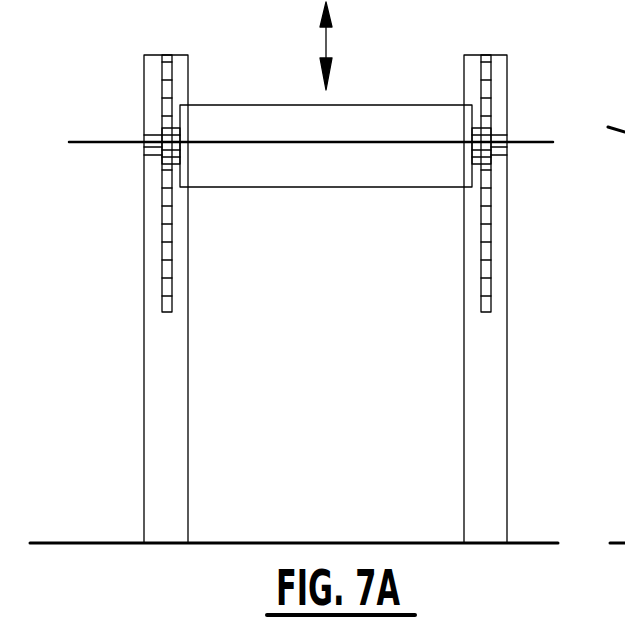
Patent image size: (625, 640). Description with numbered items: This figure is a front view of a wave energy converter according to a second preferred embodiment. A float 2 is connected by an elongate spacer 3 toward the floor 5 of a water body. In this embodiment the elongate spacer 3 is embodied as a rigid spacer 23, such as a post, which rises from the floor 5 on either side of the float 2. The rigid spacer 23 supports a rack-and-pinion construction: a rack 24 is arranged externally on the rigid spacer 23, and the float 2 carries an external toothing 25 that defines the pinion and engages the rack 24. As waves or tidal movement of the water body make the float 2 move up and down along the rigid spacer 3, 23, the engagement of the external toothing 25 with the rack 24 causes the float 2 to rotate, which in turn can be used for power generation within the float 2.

The float 2 is at (235, 118).
The elongate spacer 3 is at (363, 299).
The rigid spacer 23 is at (168, 402).
The rack 24 is at (163, 268).
The external toothing 25 is at (145, 153).
The floor 5 is at (365, 542).